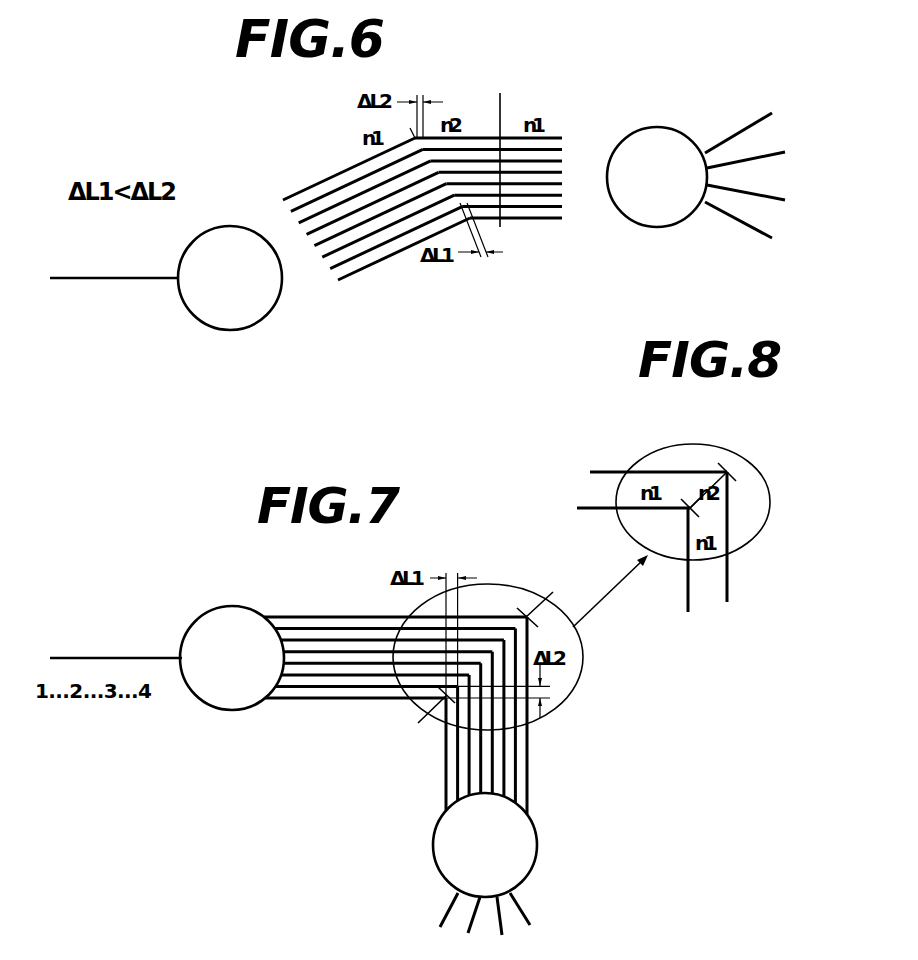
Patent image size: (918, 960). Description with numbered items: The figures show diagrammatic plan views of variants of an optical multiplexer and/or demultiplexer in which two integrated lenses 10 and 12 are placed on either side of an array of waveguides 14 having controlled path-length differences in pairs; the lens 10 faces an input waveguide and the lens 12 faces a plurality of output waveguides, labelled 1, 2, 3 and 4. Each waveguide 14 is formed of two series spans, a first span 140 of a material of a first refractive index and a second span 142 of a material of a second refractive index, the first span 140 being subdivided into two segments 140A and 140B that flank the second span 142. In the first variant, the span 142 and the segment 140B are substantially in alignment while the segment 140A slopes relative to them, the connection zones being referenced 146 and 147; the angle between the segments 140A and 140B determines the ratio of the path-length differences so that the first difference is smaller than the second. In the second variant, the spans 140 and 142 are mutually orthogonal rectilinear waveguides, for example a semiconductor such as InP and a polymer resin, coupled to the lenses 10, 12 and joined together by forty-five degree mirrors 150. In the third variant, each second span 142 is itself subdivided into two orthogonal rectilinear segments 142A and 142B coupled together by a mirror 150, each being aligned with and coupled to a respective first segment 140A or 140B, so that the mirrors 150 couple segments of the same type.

In FIG. 6, the output channel 1 is at (756, 120).
In FIG. 6, the output channel 2 is at (762, 152).
In FIG. 6, the output channel 3 is at (762, 199).
In FIG. 6, the output channel 4 is at (756, 228).
In FIG. 6, the integrated lens 10 is at (196, 338).
In FIG. 7, the integrated lens 10 is at (199, 711).
In FIG. 6, the integrated lens 12 is at (672, 232).
In FIG. 7, the integrated lens 12 is at (556, 865).
In FIG. 6, the waveguide 14 is at (453, 190).
In FIG. 7, the waveguide 14 is at (432, 675).
In FIG. 7, the first span 140 is at (324, 638).
In FIG. 6, the first segment 140A is at (314, 210).
In FIG. 8, the first segment 140A is at (590, 466).
In FIG. 6, the second segment 140B is at (556, 170).
In FIG. 8, the second segment 140B is at (734, 575).
In FIG. 6, the second span 142 is at (474, 156).
In FIG. 7, the second span 142 is at (510, 772).
In FIG. 8, the first rectilinear segment of second span 142A is at (703, 487).
In FIG. 8, the second rectilinear segment of second span 142B is at (698, 506).
In FIG. 6, the connection zone 146 is at (485, 235).
In FIG. 6, the connection zone 147 is at (500, 117).
In FIG. 7, the 45° mirror 150 is at (527, 612).
In FIG. 8, the 45° mirror 150 is at (730, 468).